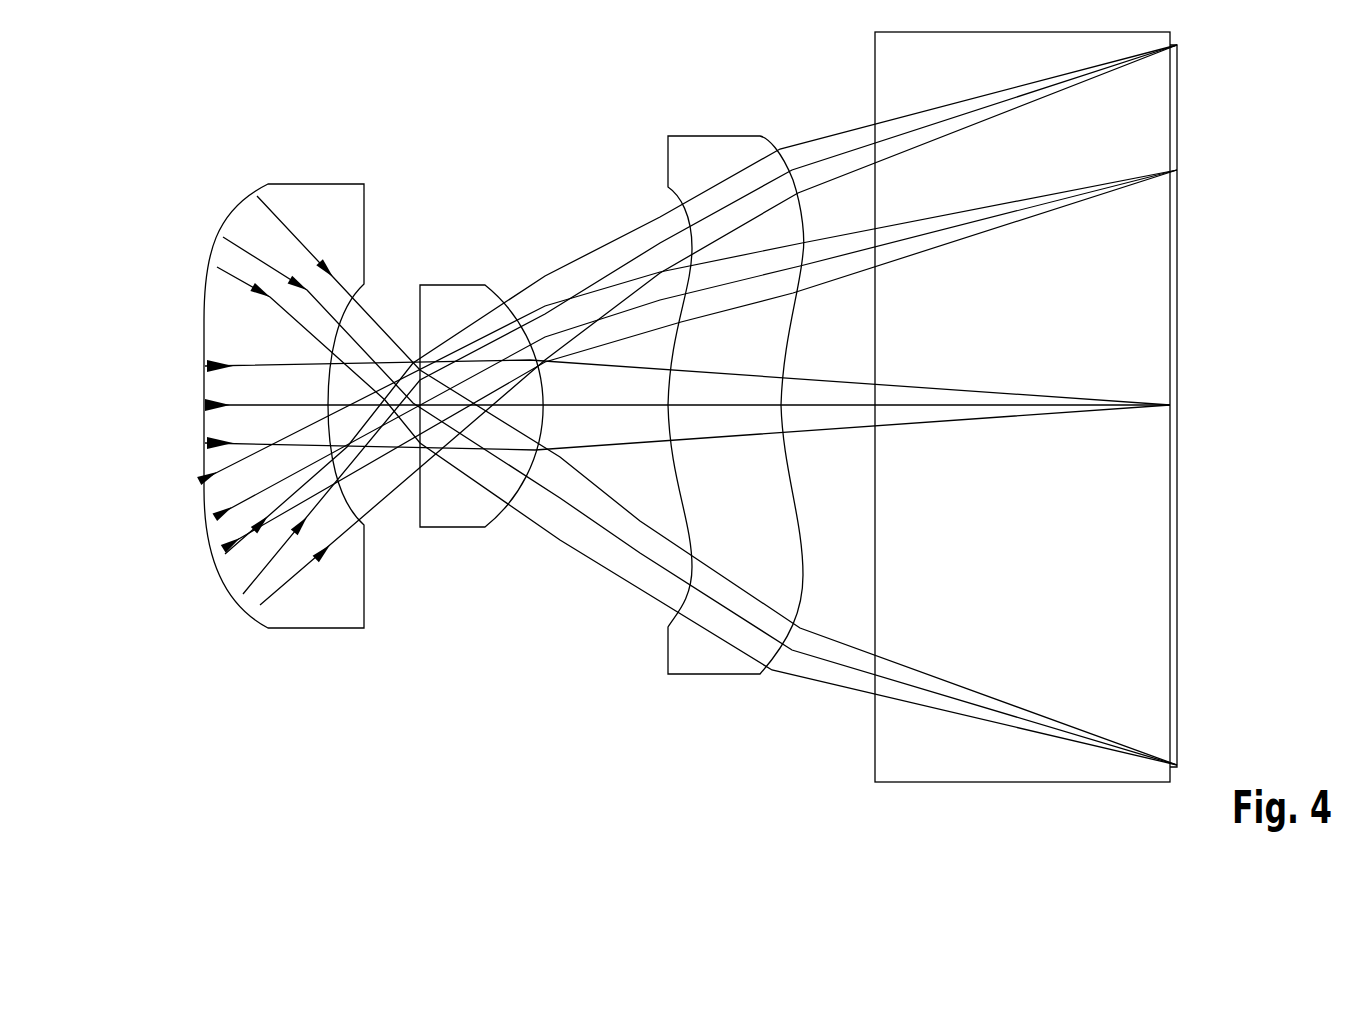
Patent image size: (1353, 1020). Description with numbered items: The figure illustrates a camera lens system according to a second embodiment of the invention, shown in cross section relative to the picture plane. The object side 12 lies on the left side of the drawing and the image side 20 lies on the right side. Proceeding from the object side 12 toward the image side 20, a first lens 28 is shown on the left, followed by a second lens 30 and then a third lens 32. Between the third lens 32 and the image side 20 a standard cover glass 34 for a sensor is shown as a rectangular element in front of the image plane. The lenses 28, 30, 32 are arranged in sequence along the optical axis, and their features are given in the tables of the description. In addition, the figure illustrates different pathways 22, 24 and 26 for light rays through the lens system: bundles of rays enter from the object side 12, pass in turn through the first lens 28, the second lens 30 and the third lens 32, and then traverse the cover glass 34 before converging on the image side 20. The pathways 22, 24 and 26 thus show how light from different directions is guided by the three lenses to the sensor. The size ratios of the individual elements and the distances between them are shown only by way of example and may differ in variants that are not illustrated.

The object side 12 is at (78, 535).
The image side 20 is at (1212, 530).
The pathway for light rays 22 is at (205, 438).
The pathway for light rays 24 is at (199, 482).
The pathway for light rays 26 is at (318, 261).
The first lens 28 is at (340, 615).
The second lens 30 is at (447, 517).
The third lens 32 is at (707, 687).
The standard cover glass 34 is at (928, 773).